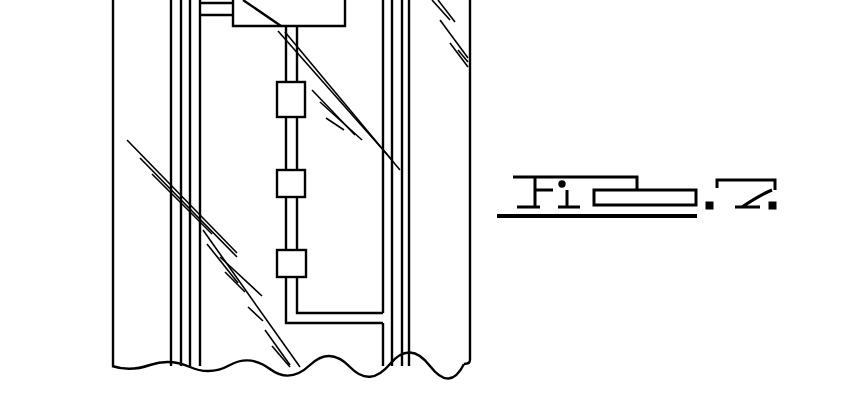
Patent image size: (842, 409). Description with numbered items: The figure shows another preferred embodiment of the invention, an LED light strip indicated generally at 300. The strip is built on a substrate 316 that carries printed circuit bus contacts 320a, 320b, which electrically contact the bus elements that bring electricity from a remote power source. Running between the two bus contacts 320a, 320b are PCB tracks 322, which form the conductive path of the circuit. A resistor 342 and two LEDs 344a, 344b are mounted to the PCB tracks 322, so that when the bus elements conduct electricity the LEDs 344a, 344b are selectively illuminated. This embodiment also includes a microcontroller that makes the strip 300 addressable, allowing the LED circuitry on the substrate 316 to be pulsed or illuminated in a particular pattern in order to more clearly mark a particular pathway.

The light strip 300 is at (508, 116).
The substrate 316 is at (222, 341).
The printed circuit bus contact 320a is at (170, 36).
The printed circuit bus contact 320b is at (410, 30).
The PCB tracks 322 is at (288, 134).
The resistor 342 is at (277, 98).
The LED 344a is at (305, 189).
The LED 344b is at (307, 262).